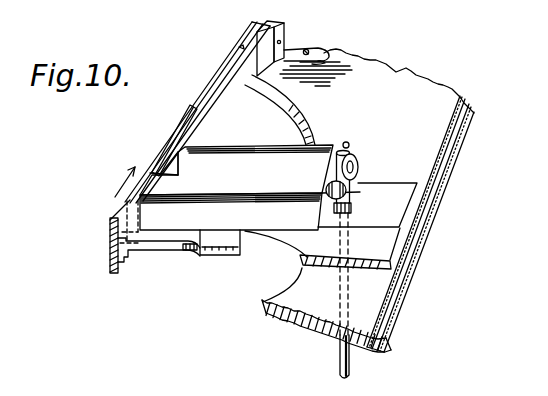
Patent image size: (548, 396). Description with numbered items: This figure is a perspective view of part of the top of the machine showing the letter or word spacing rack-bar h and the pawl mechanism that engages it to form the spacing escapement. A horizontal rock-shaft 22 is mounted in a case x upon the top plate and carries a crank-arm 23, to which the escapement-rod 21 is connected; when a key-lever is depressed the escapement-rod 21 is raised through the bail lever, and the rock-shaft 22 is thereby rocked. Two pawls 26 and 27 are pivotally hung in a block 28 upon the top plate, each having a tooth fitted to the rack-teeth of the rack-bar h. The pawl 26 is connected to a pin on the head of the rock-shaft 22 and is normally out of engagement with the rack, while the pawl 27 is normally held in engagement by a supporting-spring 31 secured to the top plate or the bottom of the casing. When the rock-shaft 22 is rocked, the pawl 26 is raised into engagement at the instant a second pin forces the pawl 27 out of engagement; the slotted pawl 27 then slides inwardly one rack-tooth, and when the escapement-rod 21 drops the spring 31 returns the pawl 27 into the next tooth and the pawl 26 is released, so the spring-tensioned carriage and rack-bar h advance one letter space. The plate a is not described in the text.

The escapement-rod 21 is at (358, 297).
The rock-shaft 22 is at (353, 170).
The crank-arm 23 is at (334, 176).
The pawl 26 is at (222, 70).
The pawl 27 is at (274, 110).
The block 28 is at (293, 47).
The supporting-spring 31 is at (198, 112).
The plate a is at (359, 200).
The case x is at (278, 200).
The rack-bar h is at (141, 236).